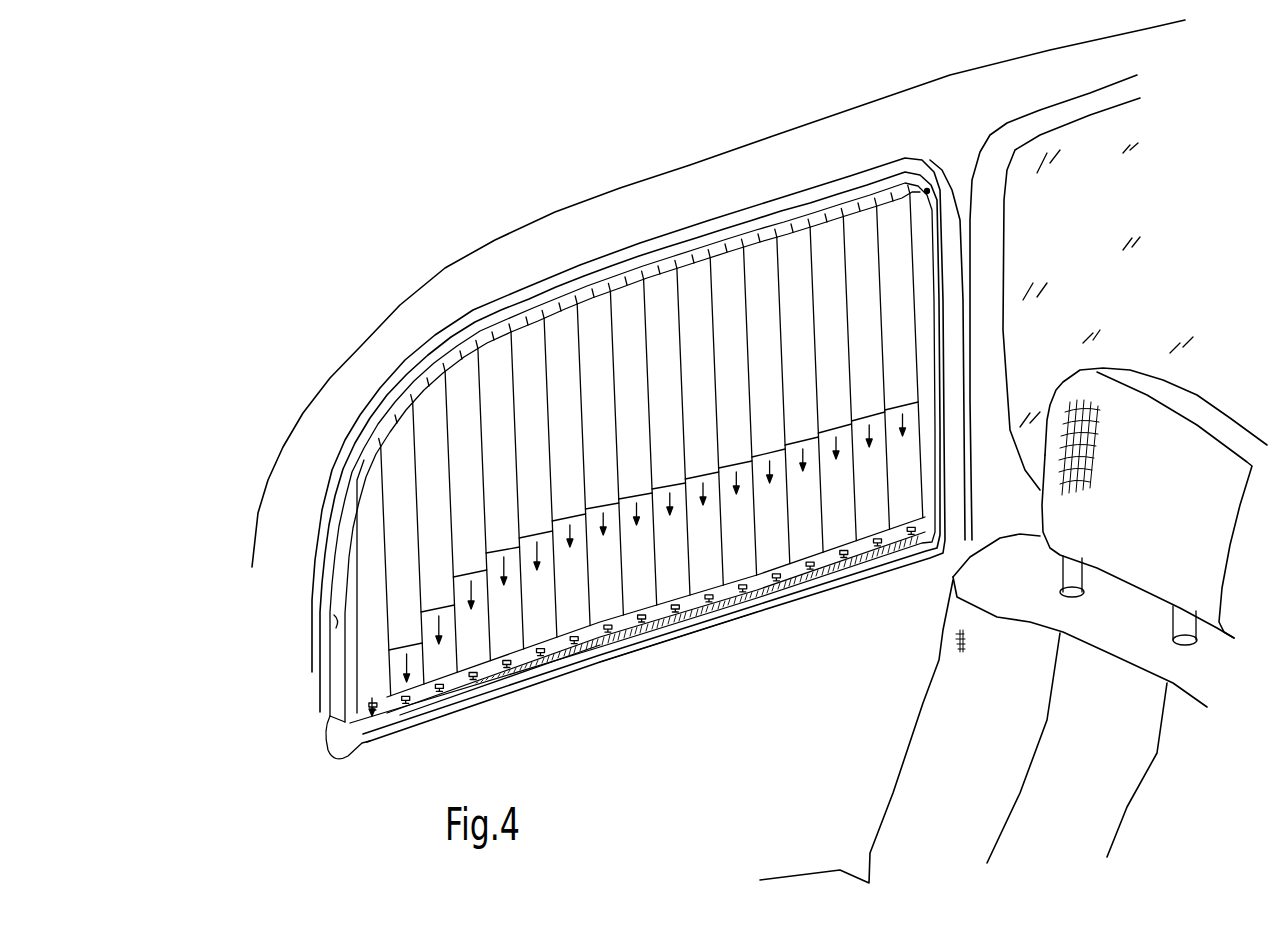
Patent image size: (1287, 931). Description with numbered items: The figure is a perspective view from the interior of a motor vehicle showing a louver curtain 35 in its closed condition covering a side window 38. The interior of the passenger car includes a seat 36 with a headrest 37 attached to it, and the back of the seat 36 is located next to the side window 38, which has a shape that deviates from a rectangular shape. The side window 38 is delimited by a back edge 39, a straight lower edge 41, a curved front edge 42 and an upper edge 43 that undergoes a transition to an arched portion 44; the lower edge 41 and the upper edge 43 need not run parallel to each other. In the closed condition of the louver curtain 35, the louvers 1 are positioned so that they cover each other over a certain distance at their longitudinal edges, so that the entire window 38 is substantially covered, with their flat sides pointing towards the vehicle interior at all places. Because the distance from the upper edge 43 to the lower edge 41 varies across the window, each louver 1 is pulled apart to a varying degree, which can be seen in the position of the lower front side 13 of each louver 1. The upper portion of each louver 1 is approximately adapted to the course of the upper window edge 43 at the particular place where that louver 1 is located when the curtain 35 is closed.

The louver 1 is at (861, 237).
The lower front side 13 is at (565, 522).
The louver curtain 35 is at (660, 675).
The seat 36 is at (1007, 755).
The headrest 37 is at (1180, 510).
The side window 38 is at (927, 190).
The back edge 39 is at (928, 323).
The lower edge 41 is at (728, 603).
The front edge 42 is at (334, 623).
The upper edge 43 is at (679, 255).
The arched portion 44 is at (412, 400).